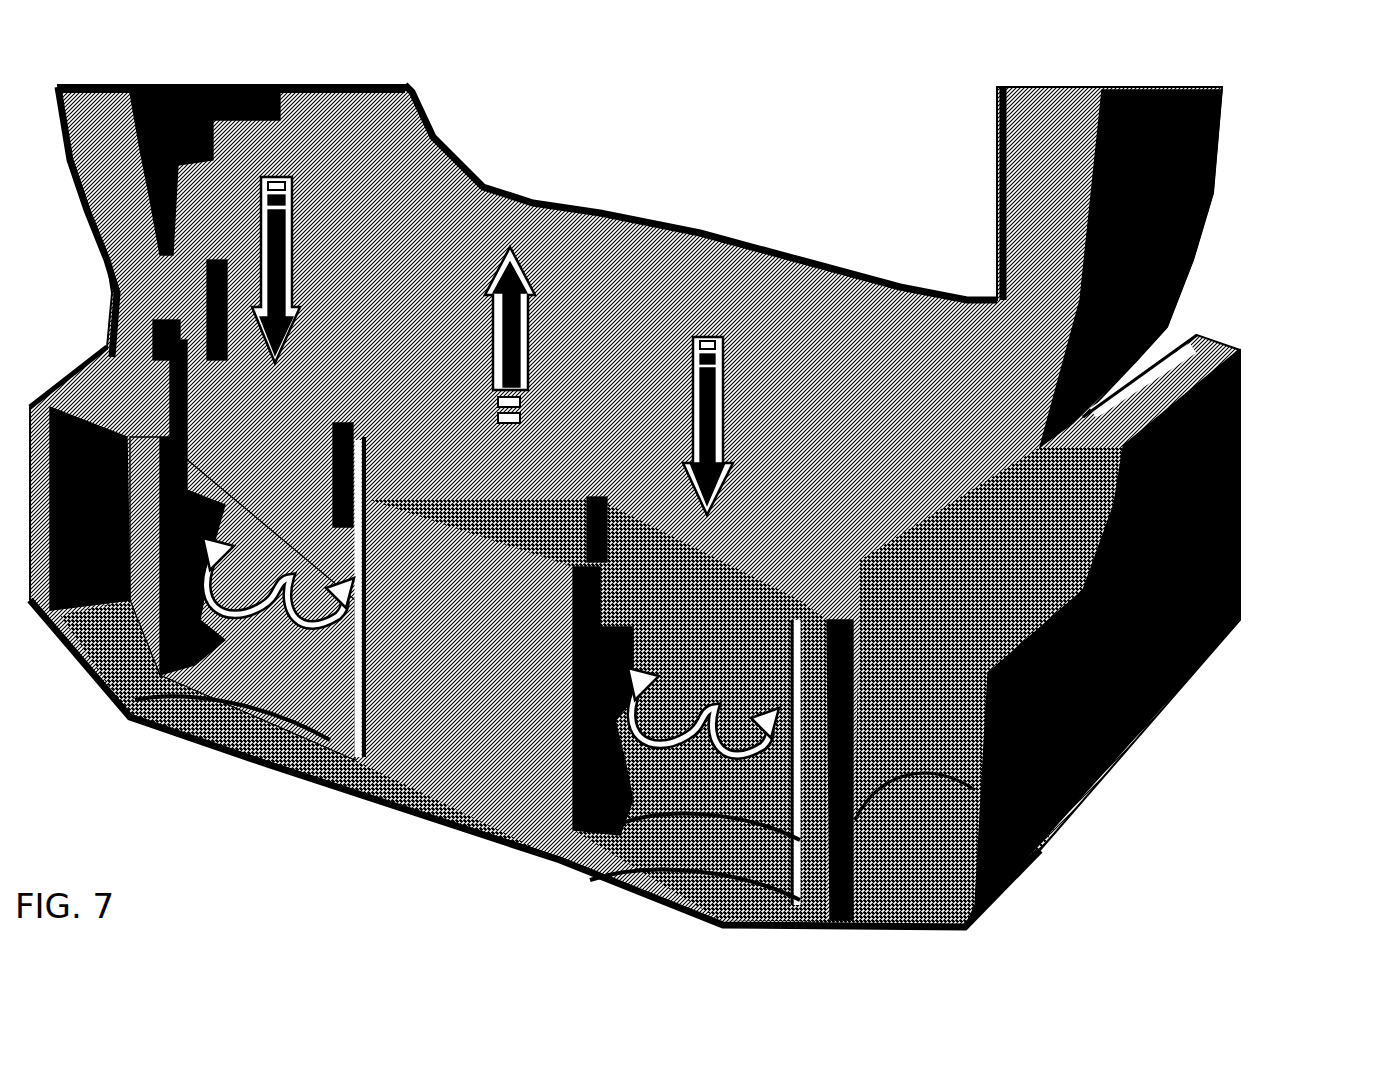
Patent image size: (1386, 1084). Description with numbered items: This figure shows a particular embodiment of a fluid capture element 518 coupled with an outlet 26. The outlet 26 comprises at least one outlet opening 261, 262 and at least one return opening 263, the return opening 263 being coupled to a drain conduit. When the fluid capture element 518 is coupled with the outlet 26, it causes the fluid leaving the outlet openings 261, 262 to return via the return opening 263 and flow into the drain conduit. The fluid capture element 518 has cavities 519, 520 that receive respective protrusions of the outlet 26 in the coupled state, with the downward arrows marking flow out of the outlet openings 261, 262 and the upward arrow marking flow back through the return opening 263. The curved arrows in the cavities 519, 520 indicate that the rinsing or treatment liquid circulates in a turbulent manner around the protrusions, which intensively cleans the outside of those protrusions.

The outlet 26 is at (704, 499).
The fluid capture element 518 is at (1189, 798).
The outlet opening 261 is at (276, 297).
The outlet opening 262 is at (708, 447).
The return opening 263 is at (509, 360).
The cavity 519 is at (278, 579).
The cavity 520 is at (703, 698).